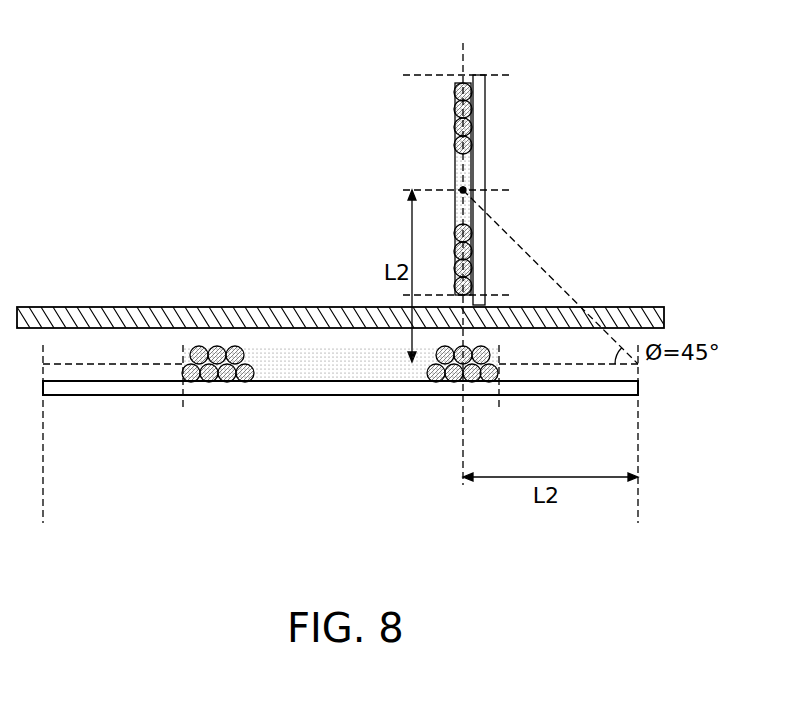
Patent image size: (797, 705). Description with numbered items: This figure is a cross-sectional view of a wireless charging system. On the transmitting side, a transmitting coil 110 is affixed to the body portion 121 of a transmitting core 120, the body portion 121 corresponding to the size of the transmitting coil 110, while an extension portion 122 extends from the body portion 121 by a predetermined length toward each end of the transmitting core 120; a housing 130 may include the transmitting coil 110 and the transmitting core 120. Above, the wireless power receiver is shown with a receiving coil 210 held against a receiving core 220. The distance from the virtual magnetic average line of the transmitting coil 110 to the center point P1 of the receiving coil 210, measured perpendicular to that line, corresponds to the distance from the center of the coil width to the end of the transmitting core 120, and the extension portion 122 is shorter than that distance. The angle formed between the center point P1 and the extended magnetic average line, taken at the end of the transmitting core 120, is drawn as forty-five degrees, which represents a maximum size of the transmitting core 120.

The transmitting coil 110 is at (484, 347).
The transmitting core 120 is at (43, 523).
The body portion 121 is at (499, 413).
The extension portion 122 is at (183, 413).
The housing 130 is at (660, 313).
The receiving coil 210 is at (457, 108).
The receiving core 220 is at (482, 110).
The center point of the receiving coil P1 is at (461, 188).